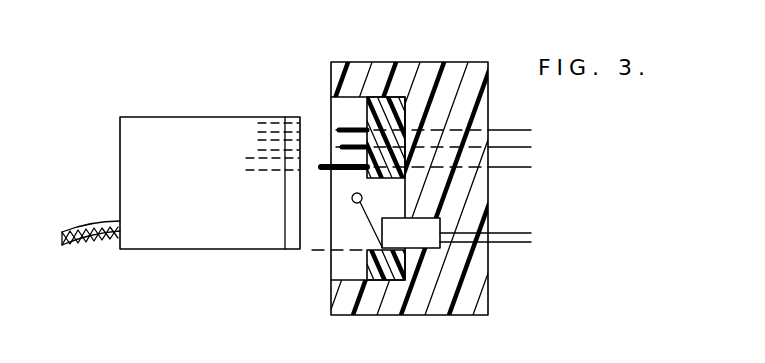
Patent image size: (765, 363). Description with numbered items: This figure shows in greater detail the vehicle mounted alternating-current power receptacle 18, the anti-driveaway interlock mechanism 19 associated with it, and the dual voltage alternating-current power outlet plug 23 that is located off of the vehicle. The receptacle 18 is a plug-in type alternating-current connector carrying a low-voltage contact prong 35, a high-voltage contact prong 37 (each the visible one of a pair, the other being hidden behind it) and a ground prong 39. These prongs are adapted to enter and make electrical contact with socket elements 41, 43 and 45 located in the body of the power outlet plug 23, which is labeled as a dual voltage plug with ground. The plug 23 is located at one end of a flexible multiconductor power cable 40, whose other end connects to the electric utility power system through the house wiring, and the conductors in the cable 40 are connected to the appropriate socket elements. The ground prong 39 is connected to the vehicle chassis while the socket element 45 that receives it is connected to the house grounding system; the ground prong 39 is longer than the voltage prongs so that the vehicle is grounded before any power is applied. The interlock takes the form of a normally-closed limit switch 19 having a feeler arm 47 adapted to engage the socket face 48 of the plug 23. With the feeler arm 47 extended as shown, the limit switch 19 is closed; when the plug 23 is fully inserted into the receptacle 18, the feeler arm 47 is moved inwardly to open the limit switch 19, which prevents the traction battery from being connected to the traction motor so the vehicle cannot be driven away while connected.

The alternating-current power receptacle 18 is at (464, 56).
The limit switch 19 is at (437, 229).
The dual voltage alternating-current power outlet plug 23 is at (140, 117).
The low-voltage alternating-current contact prong 35 is at (338, 128).
The high-voltage alternating-current contact prong 37 is at (340, 145).
The ground prong 39 is at (322, 164).
The flexible multiconductor power cable 40 is at (83, 224).
The socket element 41 is at (257, 128).
The socket element 43 is at (257, 143).
The ground socket element 45 is at (241, 168).
The feeler arm 47 is at (352, 201).
The socket face 48 is at (291, 243).